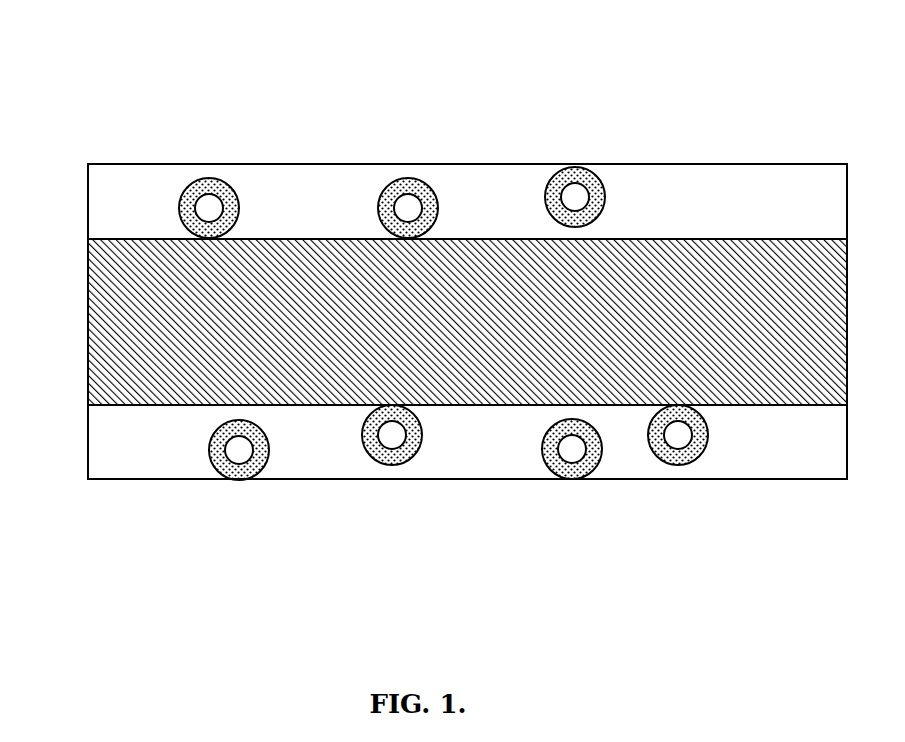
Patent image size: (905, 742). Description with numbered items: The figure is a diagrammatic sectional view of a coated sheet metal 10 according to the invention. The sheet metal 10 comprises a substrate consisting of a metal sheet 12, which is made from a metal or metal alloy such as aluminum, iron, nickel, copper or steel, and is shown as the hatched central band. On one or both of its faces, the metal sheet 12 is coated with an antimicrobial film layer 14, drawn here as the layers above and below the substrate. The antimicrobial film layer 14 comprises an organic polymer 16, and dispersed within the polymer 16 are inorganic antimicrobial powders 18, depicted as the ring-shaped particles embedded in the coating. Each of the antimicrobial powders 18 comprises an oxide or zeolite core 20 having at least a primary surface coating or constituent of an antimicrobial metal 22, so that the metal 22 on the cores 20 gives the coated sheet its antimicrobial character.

The coated sheet metal 10 is at (650, 106).
The metal sheet 12 is at (117, 273).
The antimicrobial film layer 14 is at (490, 164).
The organic polymer 16 is at (317, 178).
The inorganic antimicrobial powders 18 is at (402, 178).
The oxide or zeolite core 20 is at (240, 450).
The antimicrobial metal 22 is at (372, 447).